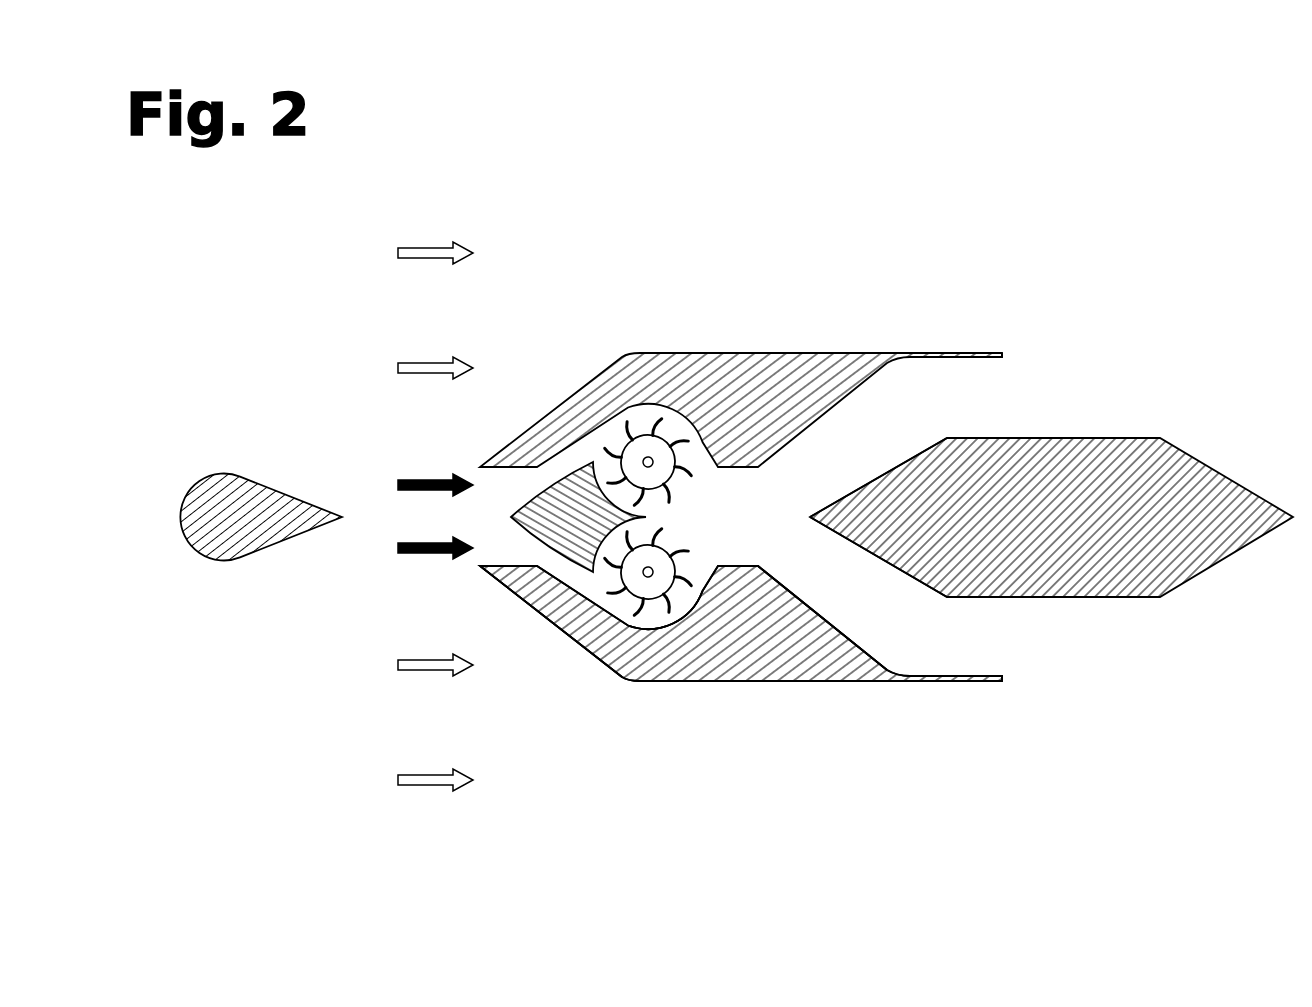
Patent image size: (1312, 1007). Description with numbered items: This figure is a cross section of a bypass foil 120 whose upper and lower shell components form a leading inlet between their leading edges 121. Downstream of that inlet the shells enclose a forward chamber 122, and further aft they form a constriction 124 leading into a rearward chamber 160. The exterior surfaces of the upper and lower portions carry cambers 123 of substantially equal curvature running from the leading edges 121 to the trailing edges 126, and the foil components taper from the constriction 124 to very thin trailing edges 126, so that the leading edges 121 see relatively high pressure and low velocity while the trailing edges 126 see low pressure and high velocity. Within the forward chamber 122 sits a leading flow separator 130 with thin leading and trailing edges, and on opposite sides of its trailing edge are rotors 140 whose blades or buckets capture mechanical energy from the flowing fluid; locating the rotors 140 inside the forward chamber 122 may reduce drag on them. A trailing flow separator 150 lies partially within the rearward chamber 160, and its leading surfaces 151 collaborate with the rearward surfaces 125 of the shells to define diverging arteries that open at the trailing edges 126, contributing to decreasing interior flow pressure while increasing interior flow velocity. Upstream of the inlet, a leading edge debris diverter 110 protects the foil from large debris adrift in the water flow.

The leading edge debris diverter 110 is at (270, 487).
The bypass foil 120 is at (483, 613).
The leading edges 121 is at (482, 567).
The forward chamber 122 is at (646, 630).
The cambers 123 is at (612, 668).
The constriction 124 is at (740, 564).
The rearward surfaces 125 is at (820, 418).
The trailing edges 126 is at (1003, 356).
The leading flow separator 130 is at (512, 516).
The rotor 140 is at (633, 430).
The trailing flow separator 150 is at (1068, 412).
The leading surfaces 151 is at (871, 486).
The rearward chamber 160 is at (842, 428).